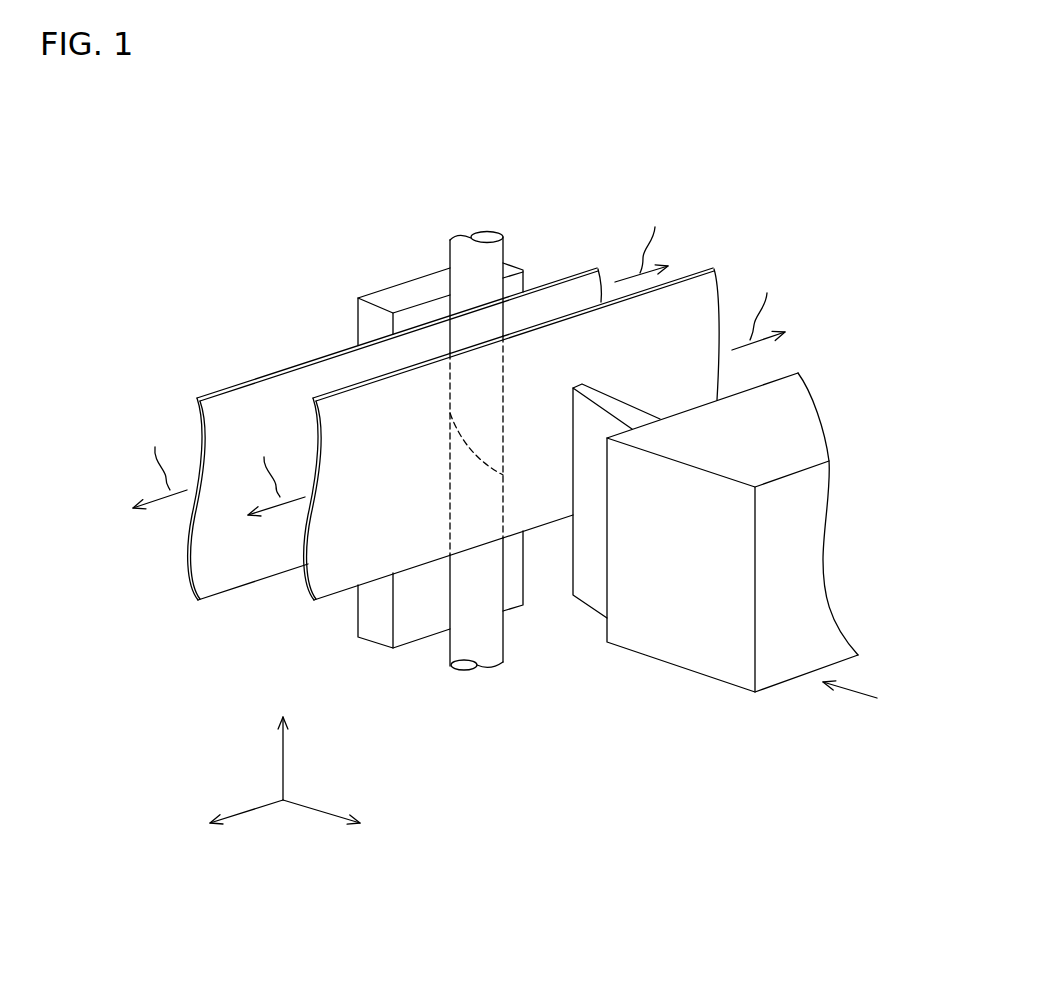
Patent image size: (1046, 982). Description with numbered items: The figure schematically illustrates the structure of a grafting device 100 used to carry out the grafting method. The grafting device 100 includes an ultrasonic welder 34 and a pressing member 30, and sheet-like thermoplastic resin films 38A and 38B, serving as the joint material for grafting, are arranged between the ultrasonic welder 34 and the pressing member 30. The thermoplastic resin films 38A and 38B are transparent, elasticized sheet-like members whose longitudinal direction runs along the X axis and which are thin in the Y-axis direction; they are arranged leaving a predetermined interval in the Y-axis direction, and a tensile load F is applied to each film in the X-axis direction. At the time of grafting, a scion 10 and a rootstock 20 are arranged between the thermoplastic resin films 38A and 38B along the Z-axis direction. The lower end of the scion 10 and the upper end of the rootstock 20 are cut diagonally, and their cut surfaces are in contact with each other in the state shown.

The grafting device 100 is at (702, 228).
The scion 10 is at (449, 253).
The rootstock 20 is at (447, 657).
The pressing member 30 is at (358, 300).
The ultrasonic welder 34 is at (687, 668).
The thermoplastic resin film 38A is at (327, 393).
The thermoplastic resin film 38B is at (242, 383).